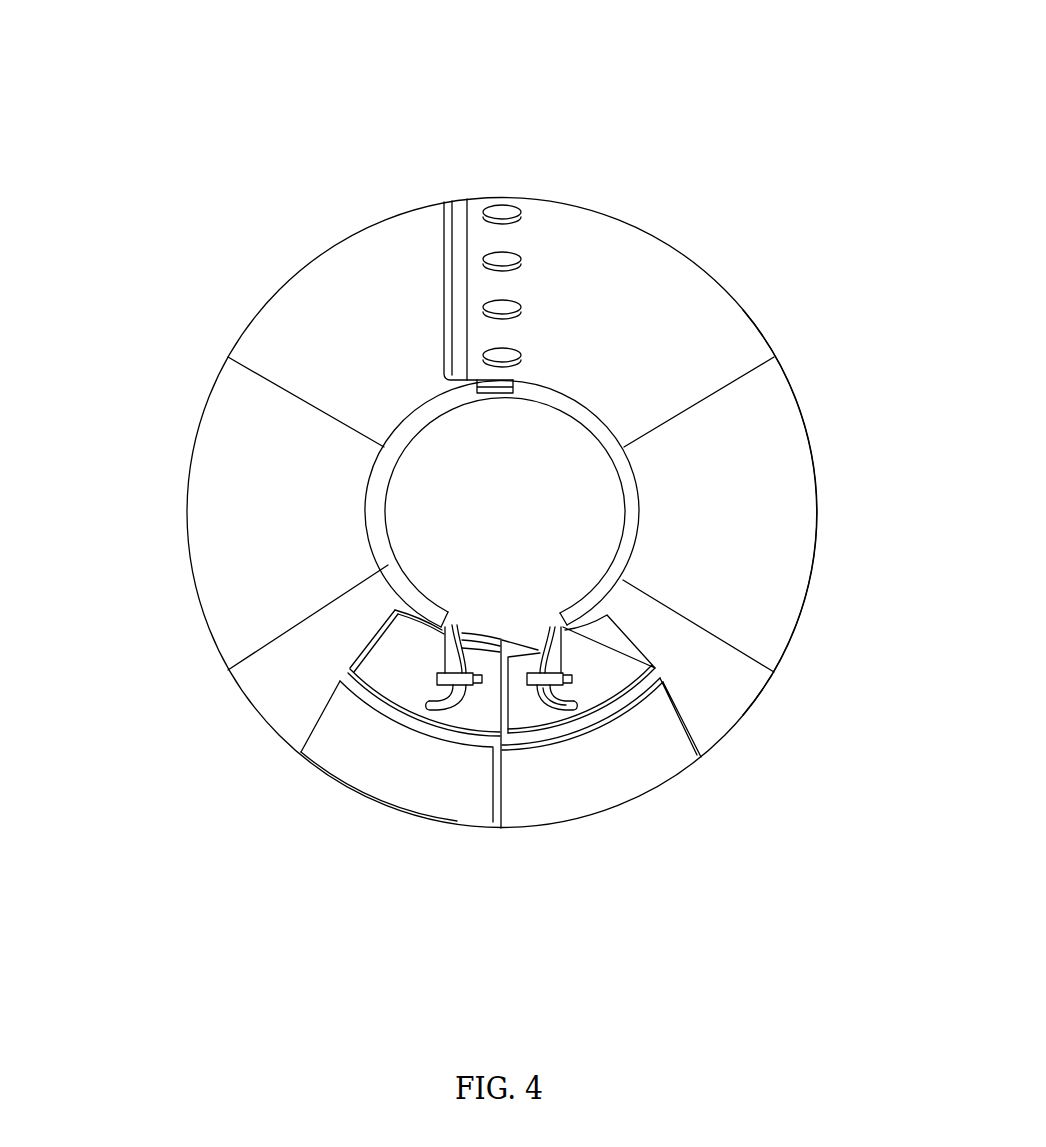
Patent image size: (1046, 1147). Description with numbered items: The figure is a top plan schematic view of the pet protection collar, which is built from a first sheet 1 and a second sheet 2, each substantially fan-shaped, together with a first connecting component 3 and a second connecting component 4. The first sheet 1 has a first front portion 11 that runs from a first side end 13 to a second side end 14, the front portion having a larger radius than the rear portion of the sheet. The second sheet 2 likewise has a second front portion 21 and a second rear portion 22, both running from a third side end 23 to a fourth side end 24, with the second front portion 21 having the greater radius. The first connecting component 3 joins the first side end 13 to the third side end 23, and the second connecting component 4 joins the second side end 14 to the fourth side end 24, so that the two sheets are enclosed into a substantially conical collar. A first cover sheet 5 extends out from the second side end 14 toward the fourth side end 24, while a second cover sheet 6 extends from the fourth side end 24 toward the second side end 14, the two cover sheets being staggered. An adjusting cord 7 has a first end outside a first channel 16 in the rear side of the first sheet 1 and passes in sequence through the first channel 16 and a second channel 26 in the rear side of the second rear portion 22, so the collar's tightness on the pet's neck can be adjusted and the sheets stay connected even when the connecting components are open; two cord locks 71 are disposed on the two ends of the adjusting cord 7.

The first sheet 1 is at (355, 495).
The first front portion 11 is at (206, 531).
The first side end 13 is at (429, 242).
The second side end 14 is at (457, 822).
The first channel 16 is at (413, 420).
The second sheet 2 is at (717, 580).
The second front portion 21 is at (795, 478).
The second rear portion 22 is at (645, 464).
The third side end 23 is at (545, 230).
The fourth side end 24 is at (623, 810).
The second channel 26 is at (582, 405).
The first connecting component 3 is at (487, 137).
The second connecting component 4 is at (505, 885).
The first cover sheet 5 is at (383, 677).
The second cover sheet 6 is at (557, 777).
The adjusting cord 7 is at (440, 716).
The cord locks 71 is at (572, 678).